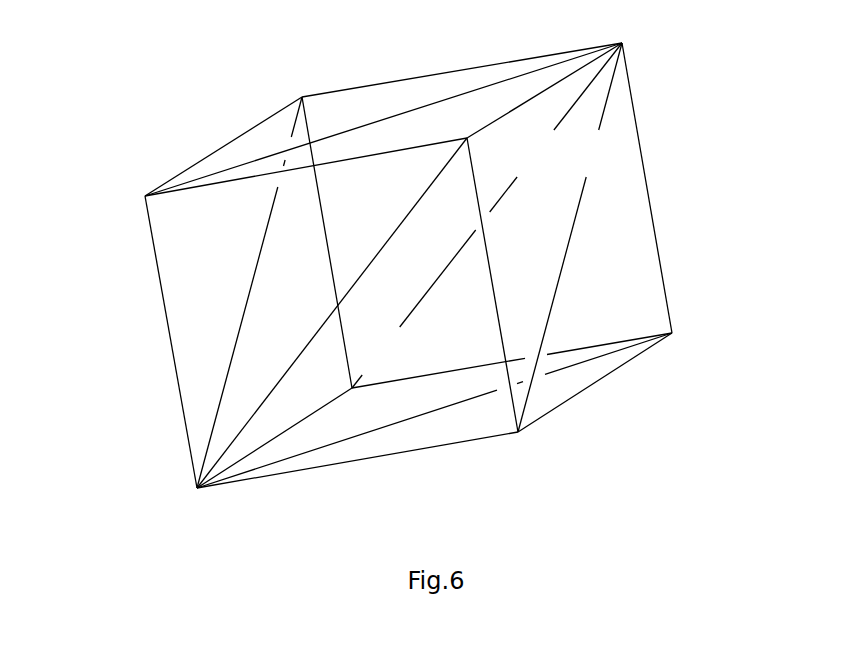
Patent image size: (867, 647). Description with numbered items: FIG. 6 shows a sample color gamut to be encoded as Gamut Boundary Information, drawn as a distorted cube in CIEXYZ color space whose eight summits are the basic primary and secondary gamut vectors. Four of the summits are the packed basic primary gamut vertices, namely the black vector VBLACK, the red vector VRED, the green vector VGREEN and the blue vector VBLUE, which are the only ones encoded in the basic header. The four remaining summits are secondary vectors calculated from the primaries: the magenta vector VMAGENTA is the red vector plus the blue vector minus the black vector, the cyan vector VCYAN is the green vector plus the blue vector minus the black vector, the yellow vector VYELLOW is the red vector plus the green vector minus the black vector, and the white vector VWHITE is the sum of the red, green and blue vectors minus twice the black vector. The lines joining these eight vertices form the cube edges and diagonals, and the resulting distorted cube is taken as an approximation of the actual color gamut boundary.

The white basic secondary gamut vector VWHITE is at (428, 174).
The cyan basic secondary gamut vector VCYAN is at (274, 266).
The green basic primary gamut vector VGREEN is at (247, 292).
The yellow basic secondary gamut vector VYELLOW is at (394, 312).
The blue basic primary gamut vector VBLUE is at (434, 265).
The magenta basic secondary gamut vector VMAGENTA is at (504, 410).
The red basic primary gamut vector VRED is at (409, 265).
The black basic primary gamut vector VBLACK is at (171, 522).